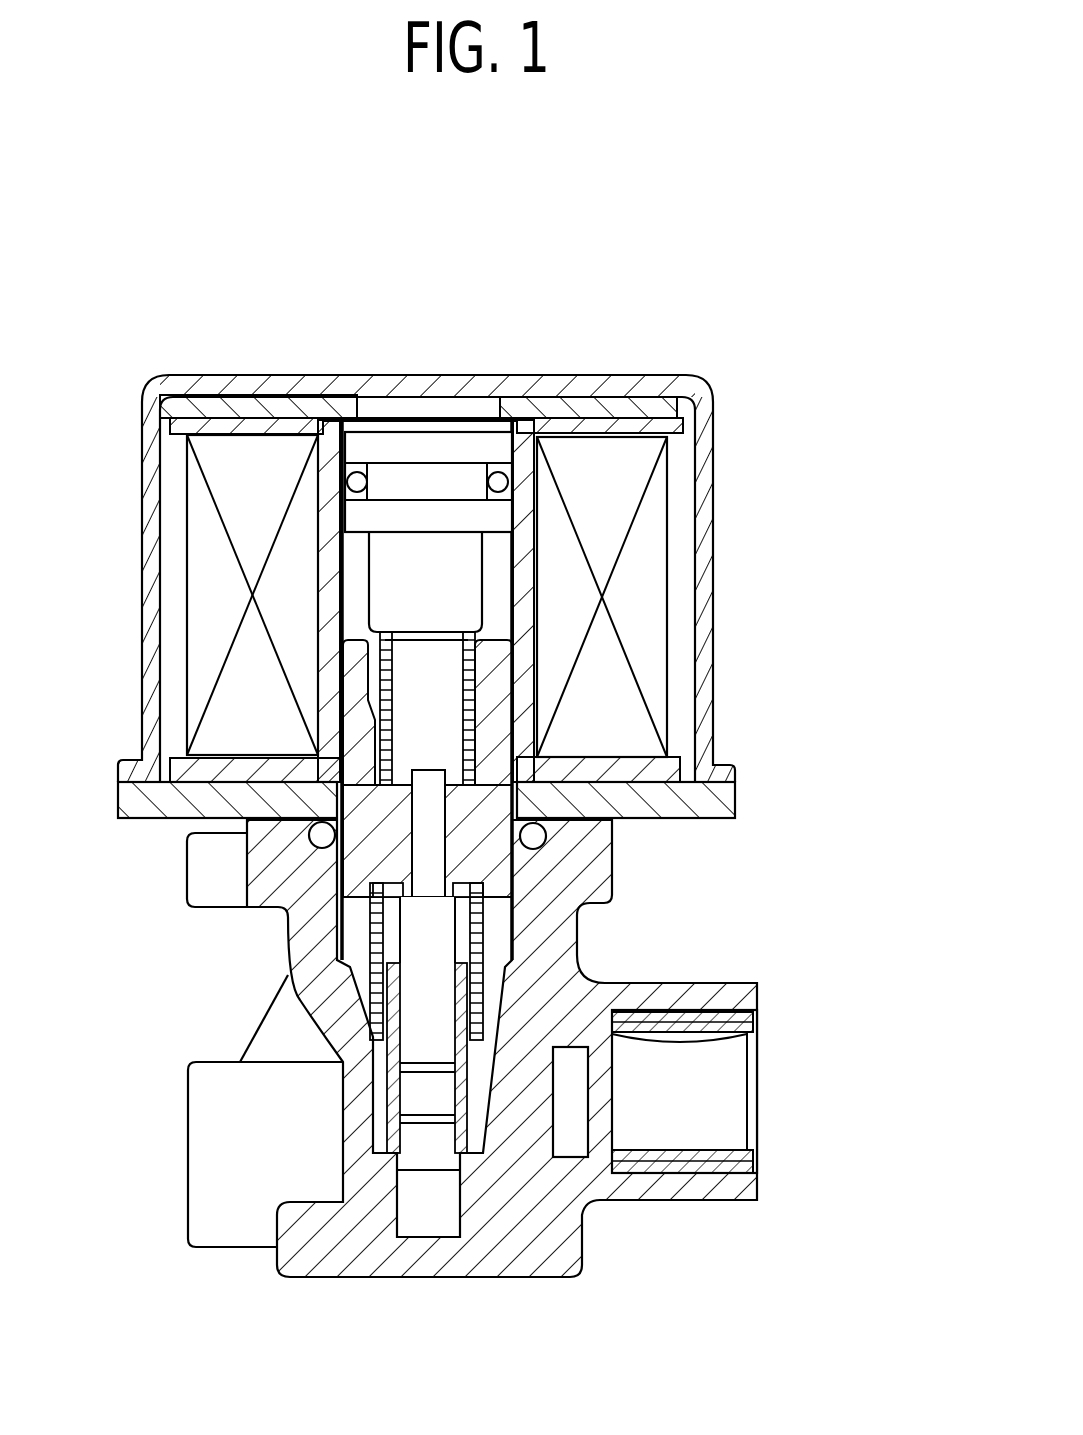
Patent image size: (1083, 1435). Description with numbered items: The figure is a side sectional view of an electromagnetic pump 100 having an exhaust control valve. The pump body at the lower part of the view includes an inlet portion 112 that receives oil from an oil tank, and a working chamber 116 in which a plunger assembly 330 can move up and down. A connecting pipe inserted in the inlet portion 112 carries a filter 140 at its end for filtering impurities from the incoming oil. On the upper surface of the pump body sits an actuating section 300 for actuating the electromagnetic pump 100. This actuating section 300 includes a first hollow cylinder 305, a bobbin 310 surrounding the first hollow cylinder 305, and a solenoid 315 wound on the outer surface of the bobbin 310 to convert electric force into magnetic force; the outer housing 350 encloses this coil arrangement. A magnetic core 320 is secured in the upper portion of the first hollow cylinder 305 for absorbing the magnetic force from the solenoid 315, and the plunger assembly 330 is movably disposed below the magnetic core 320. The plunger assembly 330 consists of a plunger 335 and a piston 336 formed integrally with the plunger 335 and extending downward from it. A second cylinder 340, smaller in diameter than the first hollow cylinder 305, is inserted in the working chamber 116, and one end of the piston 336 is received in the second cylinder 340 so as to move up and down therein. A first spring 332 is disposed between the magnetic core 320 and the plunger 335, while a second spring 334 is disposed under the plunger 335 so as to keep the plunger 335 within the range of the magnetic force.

The electromagnetic pump 100 is at (770, 191).
The actuating section 300 is at (728, 377).
The first hollow cylinder 305 is at (340, 433).
The bobbin 310 is at (540, 604).
The solenoid 315 is at (618, 500).
The magnetic core 320 is at (438, 560).
The first spring 332 is at (472, 728).
The plunger 335 is at (475, 876).
The piston 336 is at (430, 915).
The housing 350 is at (710, 612).
The plunger assembly 330 is at (398, 946).
The second spring 334 is at (590, 1027).
The filter 140 is at (593, 1070).
The inlet portion 112 is at (717, 1112).
The second cylinder 340 is at (460, 1100).
The working chamber 116 is at (443, 1217).